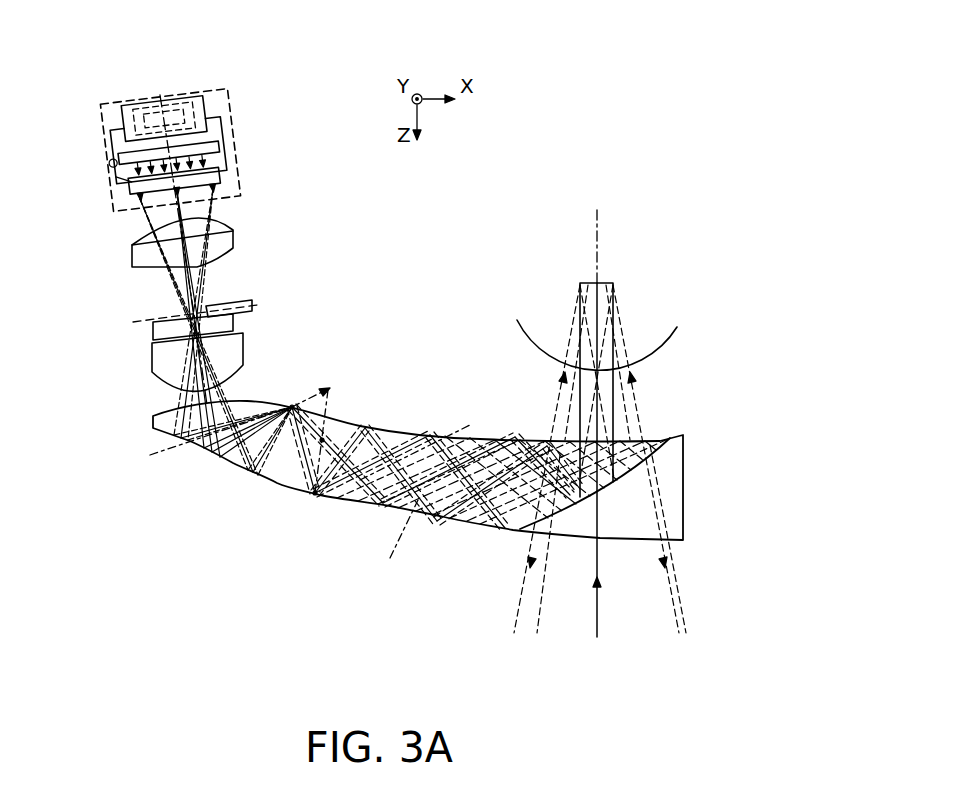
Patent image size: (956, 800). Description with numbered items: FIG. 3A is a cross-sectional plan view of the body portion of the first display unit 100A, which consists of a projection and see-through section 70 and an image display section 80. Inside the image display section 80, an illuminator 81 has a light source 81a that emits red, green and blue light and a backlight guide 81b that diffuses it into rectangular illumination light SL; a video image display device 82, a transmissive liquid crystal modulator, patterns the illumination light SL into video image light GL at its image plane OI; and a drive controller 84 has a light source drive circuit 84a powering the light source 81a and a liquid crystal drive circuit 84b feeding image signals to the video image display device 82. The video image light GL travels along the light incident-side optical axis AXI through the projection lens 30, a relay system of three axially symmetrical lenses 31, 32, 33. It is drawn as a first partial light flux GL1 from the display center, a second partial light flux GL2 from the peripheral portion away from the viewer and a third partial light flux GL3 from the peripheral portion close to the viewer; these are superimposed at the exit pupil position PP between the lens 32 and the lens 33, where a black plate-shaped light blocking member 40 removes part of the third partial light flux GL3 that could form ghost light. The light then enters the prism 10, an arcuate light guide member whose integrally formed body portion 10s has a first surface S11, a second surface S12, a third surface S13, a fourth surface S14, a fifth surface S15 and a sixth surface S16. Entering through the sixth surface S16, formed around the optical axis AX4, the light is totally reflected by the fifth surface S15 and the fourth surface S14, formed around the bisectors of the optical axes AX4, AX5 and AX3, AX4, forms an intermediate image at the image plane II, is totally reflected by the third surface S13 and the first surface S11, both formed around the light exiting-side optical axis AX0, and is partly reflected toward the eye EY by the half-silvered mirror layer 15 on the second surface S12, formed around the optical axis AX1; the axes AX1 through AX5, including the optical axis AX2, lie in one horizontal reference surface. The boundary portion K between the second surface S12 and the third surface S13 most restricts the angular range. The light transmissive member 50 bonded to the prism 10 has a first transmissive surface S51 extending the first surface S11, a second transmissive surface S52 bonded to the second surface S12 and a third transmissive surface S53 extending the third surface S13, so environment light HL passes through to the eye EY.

The first display unit 100A is at (575, 146).
The image display section 80 is at (241, 95).
The illuminator 81 is at (93, 123).
The light source 81a is at (108, 162).
The backlight guide 81b is at (128, 168).
The video image display device 82 is at (138, 198).
The drive controller 84 is at (143, 102).
The light source drive circuit 84a is at (158, 97).
The liquid crystal drive circuit 84b is at (191, 94).
The illumination light SL is at (222, 149).
The image plane OI is at (205, 181).
The light incident-side optical axis AXI is at (218, 141).
The projection lens 30 is at (213, 297).
The video image light GL is at (194, 265).
The first partial light flux GL1 is at (157, 287).
The second partial light flux GL2 is at (153, 290).
The third partial light flux GL3 is at (224, 222).
The lens 33 is at (234, 240).
The lens 32 is at (236, 316).
The lens 31 is at (245, 333).
The light blocking member 40 is at (236, 300).
The exit pupil position PP is at (133, 322).
The projection and see-through section 70 is at (373, 303).
The prism 10 is at (418, 467).
The body portion 10s is at (289, 490).
The first surface S11 is at (494, 437).
The second surface S12 is at (553, 528).
The third surface S13 is at (431, 512).
The fourth surface S14 is at (335, 409).
The fifth surface S15 is at (258, 481).
The sixth surface S16 is at (247, 403).
The first transmissive surface S51 is at (661, 441).
The second transmissive surface S52 is at (654, 370).
The third transmissive surface S53 is at (590, 540).
The half-silvered mirror layer 15 is at (633, 470).
The light transmissive member 50 is at (600, 460).
The boundary portion K is at (519, 529).
The image plane of the intermediate image II is at (314, 510).
The light exiting-side optical axis AX0 is at (600, 248).
The optical axis AX1 is at (541, 372).
The optical axis AX2 is at (389, 542).
The optical axis AX3 is at (403, 458).
The optical axis AX4 is at (330, 388).
The optical axis AX5 is at (196, 439).
The eye EY is at (519, 321).
The environment light HL is at (526, 632).